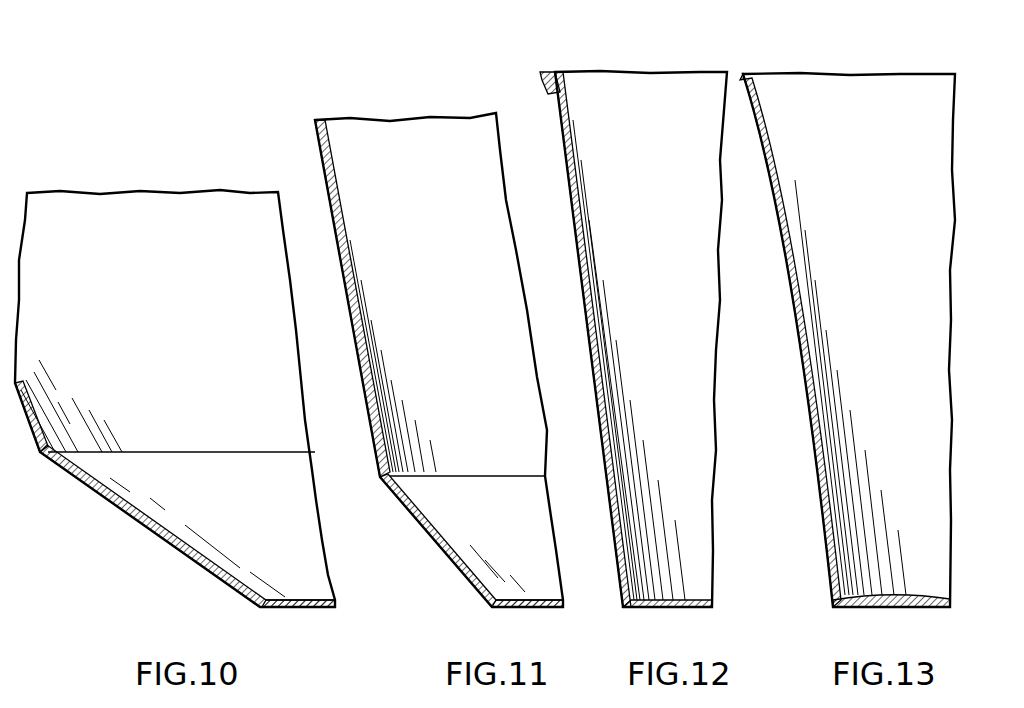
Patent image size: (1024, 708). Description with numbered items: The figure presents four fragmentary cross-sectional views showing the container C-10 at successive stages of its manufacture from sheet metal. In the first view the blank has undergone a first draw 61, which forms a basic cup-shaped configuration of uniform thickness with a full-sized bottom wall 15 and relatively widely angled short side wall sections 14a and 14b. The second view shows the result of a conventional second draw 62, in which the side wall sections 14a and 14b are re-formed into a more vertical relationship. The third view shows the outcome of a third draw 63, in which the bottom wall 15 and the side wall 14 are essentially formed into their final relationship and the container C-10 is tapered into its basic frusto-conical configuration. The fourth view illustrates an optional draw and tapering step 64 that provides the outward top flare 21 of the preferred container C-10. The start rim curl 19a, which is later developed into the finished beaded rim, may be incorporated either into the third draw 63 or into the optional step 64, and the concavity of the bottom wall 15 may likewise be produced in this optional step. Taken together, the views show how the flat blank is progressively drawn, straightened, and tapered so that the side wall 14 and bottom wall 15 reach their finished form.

In FIG. 12, the container C-10 is at (603, 339).
In FIG. 13, the container C-10 is at (860, 340).
In FIG. 12, the side wall 14 is at (598, 300).
In FIG. 13, the side wall 14 is at (847, 340).
In FIG. 10, the side wall section 14a is at (133, 510).
In FIG. 11, the side wall section 14a is at (440, 535).
In FIG. 10, the side wall section 14b is at (28, 416).
In FIG. 11, the side wall section 14b is at (348, 258).
In FIG. 10, the bottom wall 15 is at (298, 600).
In FIG. 11, the bottom wall 15 is at (535, 600).
In FIG. 12, the bottom wall 15 is at (690, 598).
In FIG. 13, the bottom wall 15 is at (920, 598).
In FIG. 12, the start rim curl 19a is at (546, 72).
In FIG. 13, the start rim curl 19a is at (748, 74).
In FIG. 13, the outward top flare 21 is at (773, 118).
In FIG. 10, the first draw 61 is at (187, 526).
In FIG. 11, the second draw 62 is at (471, 540).
In FIG. 12, the third draw 63 is at (616, 572).
In FIG. 13, the optional draw and tapering step 64 is at (822, 572).